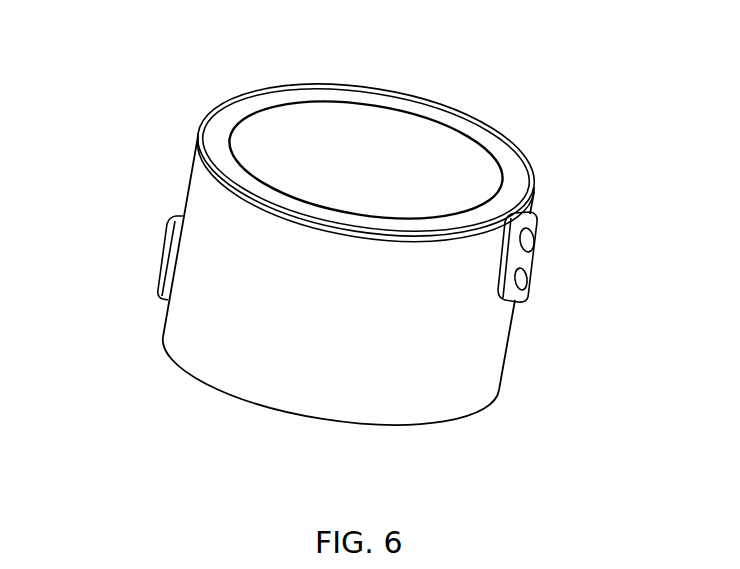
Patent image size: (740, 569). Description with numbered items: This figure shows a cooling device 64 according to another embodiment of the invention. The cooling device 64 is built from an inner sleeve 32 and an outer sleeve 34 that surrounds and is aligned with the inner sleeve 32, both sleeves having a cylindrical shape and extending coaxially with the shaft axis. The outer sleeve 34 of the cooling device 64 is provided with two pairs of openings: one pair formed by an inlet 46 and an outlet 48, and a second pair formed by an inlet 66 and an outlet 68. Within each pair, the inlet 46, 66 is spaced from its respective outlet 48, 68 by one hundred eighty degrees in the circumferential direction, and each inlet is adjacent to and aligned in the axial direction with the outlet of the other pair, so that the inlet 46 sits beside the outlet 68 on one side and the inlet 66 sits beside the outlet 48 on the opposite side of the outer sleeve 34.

The cooling device 64 is at (160, 96).
The inner sleeve 32 is at (475, 132).
The outer sleeve 34 is at (527, 175).
The inlet 66 is at (528, 240).
The outlet 68 is at (167, 237).
The inlet 46 is at (160, 265).
The outlet 48 is at (525, 280).